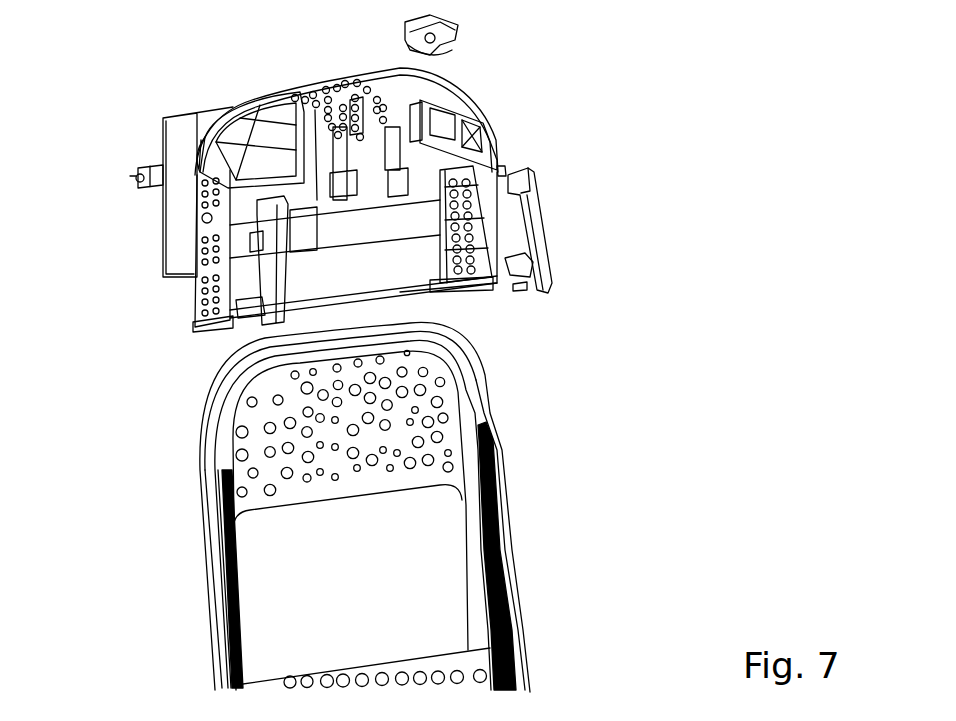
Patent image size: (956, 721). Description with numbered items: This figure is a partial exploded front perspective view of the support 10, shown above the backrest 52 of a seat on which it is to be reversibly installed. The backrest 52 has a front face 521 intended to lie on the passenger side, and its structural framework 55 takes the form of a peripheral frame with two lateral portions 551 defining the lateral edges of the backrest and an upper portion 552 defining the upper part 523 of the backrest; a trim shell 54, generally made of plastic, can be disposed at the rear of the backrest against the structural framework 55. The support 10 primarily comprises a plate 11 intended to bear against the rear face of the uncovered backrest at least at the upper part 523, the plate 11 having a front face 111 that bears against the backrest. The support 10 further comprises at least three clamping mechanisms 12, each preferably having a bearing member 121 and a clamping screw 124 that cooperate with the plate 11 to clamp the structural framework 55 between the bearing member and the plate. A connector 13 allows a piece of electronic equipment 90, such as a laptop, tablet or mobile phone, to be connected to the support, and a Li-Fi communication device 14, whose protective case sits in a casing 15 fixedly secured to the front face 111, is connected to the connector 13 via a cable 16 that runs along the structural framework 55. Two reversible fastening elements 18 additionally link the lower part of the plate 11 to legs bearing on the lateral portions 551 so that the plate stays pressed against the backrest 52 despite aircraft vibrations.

The support 10 is at (617, 62).
The plate 11 is at (330, 86).
The front face 111 is at (297, 93).
The clamping mechanism 12 is at (583, 220).
The bearing member 121 is at (390, 165).
The clamping screw 124 is at (500, 173).
The connector 13 is at (140, 170).
The communication device 14 is at (486, 32).
The casing 15 is at (208, 130).
The cable 16 is at (138, 185).
The reversible fastening element 18 is at (255, 311).
The electronic equipment 90 is at (165, 140).
The backrest 52 is at (554, 519).
The front face 521 is at (537, 590).
The upper part 523 is at (179, 382).
The trim shell 54 is at (205, 408).
The structural framework 55 is at (458, 363).
The lateral portion 551 is at (220, 462).
The upper portion 552 is at (347, 352).